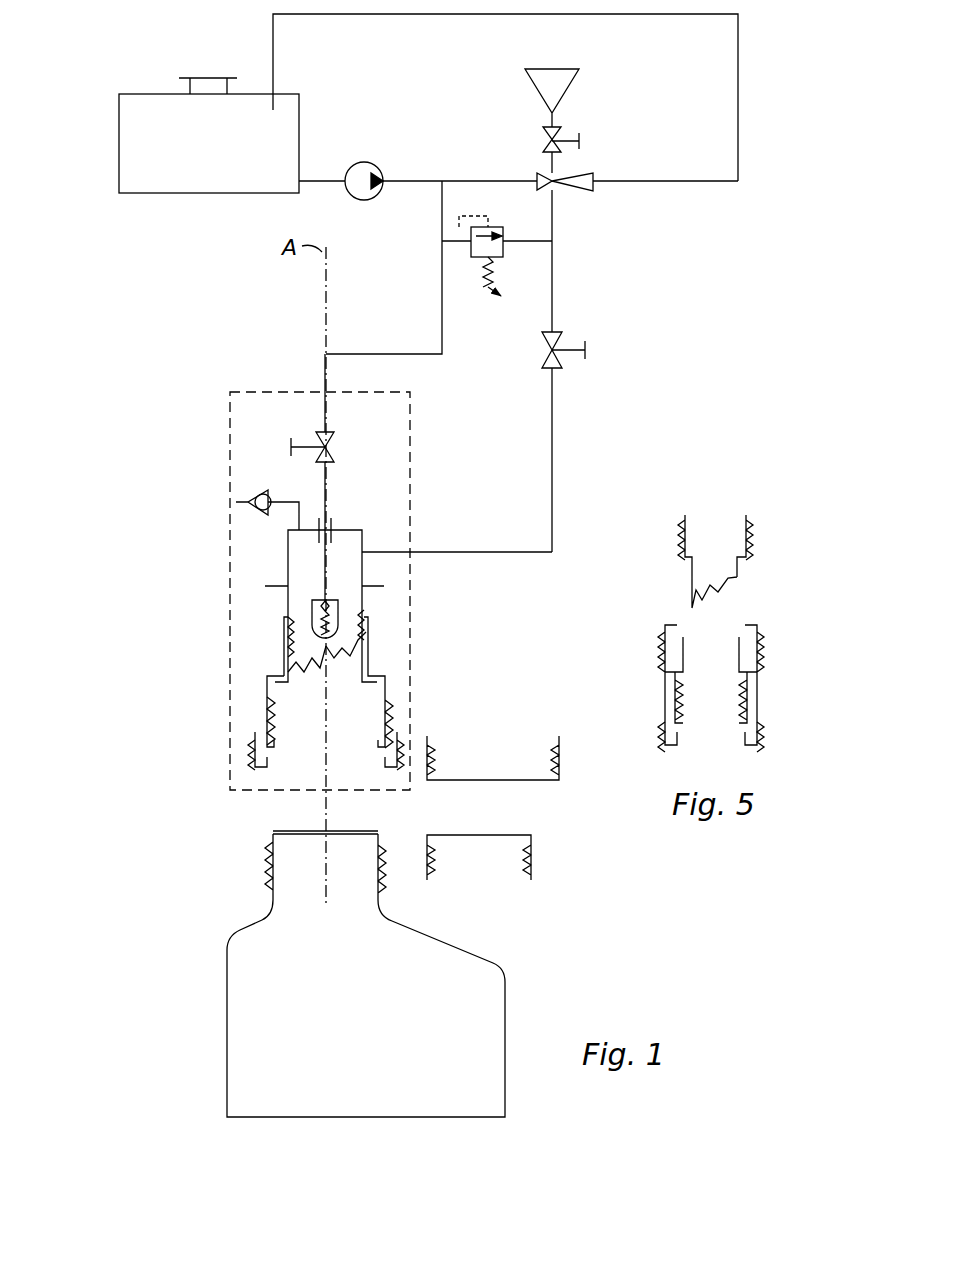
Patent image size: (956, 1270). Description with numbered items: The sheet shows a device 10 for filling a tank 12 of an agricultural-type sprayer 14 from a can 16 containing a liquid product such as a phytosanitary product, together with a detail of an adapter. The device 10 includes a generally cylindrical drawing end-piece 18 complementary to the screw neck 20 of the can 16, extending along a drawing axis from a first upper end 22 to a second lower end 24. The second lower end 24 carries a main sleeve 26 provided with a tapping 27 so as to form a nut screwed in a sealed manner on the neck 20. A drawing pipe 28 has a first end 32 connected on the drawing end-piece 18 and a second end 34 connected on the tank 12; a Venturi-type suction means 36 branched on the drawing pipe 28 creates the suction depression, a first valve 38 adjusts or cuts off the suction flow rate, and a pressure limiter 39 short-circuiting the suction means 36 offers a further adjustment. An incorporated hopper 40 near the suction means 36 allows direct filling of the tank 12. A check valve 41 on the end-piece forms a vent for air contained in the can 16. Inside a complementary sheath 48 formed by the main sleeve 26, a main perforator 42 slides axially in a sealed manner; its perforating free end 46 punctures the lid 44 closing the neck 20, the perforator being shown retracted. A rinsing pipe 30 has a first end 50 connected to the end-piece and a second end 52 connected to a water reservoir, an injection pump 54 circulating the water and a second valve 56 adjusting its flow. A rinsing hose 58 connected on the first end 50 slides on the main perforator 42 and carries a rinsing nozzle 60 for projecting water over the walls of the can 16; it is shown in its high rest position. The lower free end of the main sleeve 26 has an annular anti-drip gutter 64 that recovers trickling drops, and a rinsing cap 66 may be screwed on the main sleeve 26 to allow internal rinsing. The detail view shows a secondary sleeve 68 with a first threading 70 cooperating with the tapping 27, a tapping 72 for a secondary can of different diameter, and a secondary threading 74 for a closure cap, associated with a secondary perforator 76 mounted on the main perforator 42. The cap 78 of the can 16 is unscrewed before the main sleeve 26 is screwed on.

In FIG. 1, the device 10 is at (699, 391).
In FIG. 1, the tank 12 is at (222, 72).
In FIG. 1, the sprayer 14 is at (131, 77).
In FIG. 1, the can 16 is at (518, 971).
In FIG. 1, the drawing end-piece 18 is at (277, 640).
In FIG. 1, the screw neck 20 is at (268, 855).
In FIG. 1, the first upper end 22 is at (282, 553).
In FIG. 1, the second lower end 24 is at (246, 752).
In FIG. 1, the main sleeve 26 is at (259, 702).
In FIG. 1, the tapping 27 is at (258, 726).
In FIG. 1, the drawing pipe 28 is at (573, 487).
In FIG. 1, the rinsing pipe 30 is at (353, 344).
In FIG. 1, the first end 32 is at (391, 554).
In FIG. 1, the second end 34 is at (274, 62).
In FIG. 1, the Venturi-type suction means 36 is at (592, 199).
In FIG. 1, the first valve 38 is at (571, 339).
In FIG. 1, the pressure limiter 39 is at (516, 256).
In FIG. 1, the incorporated hopper 40 is at (573, 62).
In FIG. 1, the check valve 41 is at (241, 494).
In FIG. 1, the main perforator 42 is at (351, 652).
In FIG. 1, the lid 44 is at (290, 831).
In FIG. 1, the perforating free end 46 is at (343, 653).
In FIG. 1, the sheath 48 is at (368, 640).
In FIG. 1, the first end 50 is at (329, 497).
In FIG. 1, the second end 52 is at (324, 179).
In FIG. 1, the injection pump 54 is at (386, 165).
In FIG. 1, the second valve 56 is at (310, 432).
In FIG. 1, the rinsing hose 58 is at (312, 586).
In FIG. 1, the rinsing nozzle 60 is at (316, 604).
In FIG. 1, the annular anti-drip gutter 64 is at (260, 770).
In FIG. 1, the rinsing cap 66 is at (504, 758).
In FIG. 5, the secondary sleeve 68 is at (760, 687).
In FIG. 5, the first threading 70 is at (758, 638).
In FIG. 5, the tapping 72 is at (738, 702).
In FIG. 5, the secondary threading 74 is at (761, 730).
In FIG. 5, the secondary perforator 76 is at (789, 538).
In FIG. 1, the cap 78 is at (551, 856).